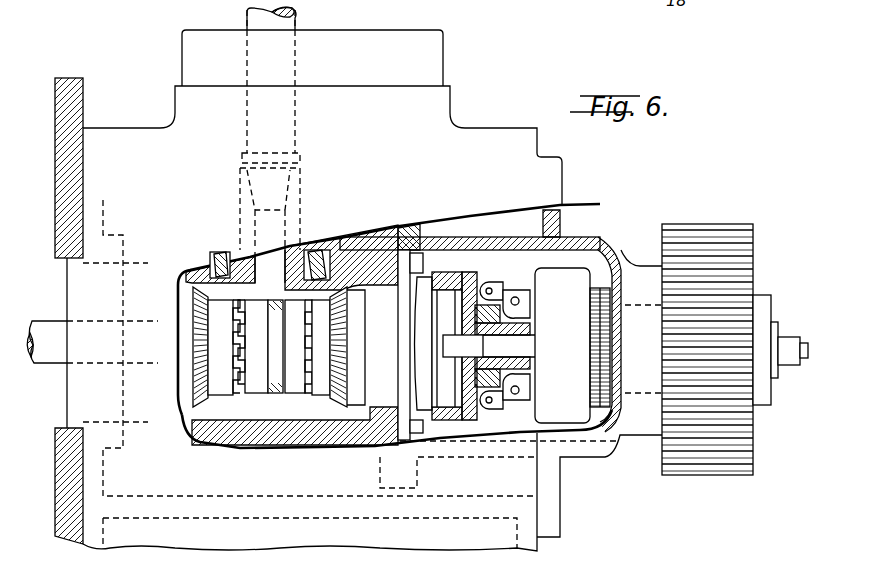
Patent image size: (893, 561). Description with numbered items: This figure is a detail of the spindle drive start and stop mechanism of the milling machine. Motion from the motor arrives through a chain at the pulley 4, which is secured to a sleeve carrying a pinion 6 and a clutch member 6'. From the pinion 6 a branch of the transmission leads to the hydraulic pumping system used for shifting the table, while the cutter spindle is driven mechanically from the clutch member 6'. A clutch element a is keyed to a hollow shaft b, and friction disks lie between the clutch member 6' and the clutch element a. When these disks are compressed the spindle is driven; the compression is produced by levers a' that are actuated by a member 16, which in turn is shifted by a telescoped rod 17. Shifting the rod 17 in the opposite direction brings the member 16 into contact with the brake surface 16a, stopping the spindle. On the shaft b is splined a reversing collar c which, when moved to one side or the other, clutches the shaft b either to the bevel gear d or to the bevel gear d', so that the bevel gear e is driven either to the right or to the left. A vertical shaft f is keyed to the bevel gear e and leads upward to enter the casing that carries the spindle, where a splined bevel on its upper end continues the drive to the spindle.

The vertical shaft f is at (300, 19).
The hollow shaft b is at (50, 362).
The bevel gear d' is at (216, 352).
The reversing collar c is at (260, 386).
The bevel gear d is at (316, 352).
The bevel gear e is at (325, 292).
The brake surface 16a is at (415, 375).
The member 16 is at (458, 421).
The telescoped rod 17 is at (478, 348).
The levers a' is at (495, 347).
The clutch element a is at (516, 329).
The clutch member 6' is at (572, 345).
The pinion 6 is at (632, 374).
The pulley 4 is at (707, 478).